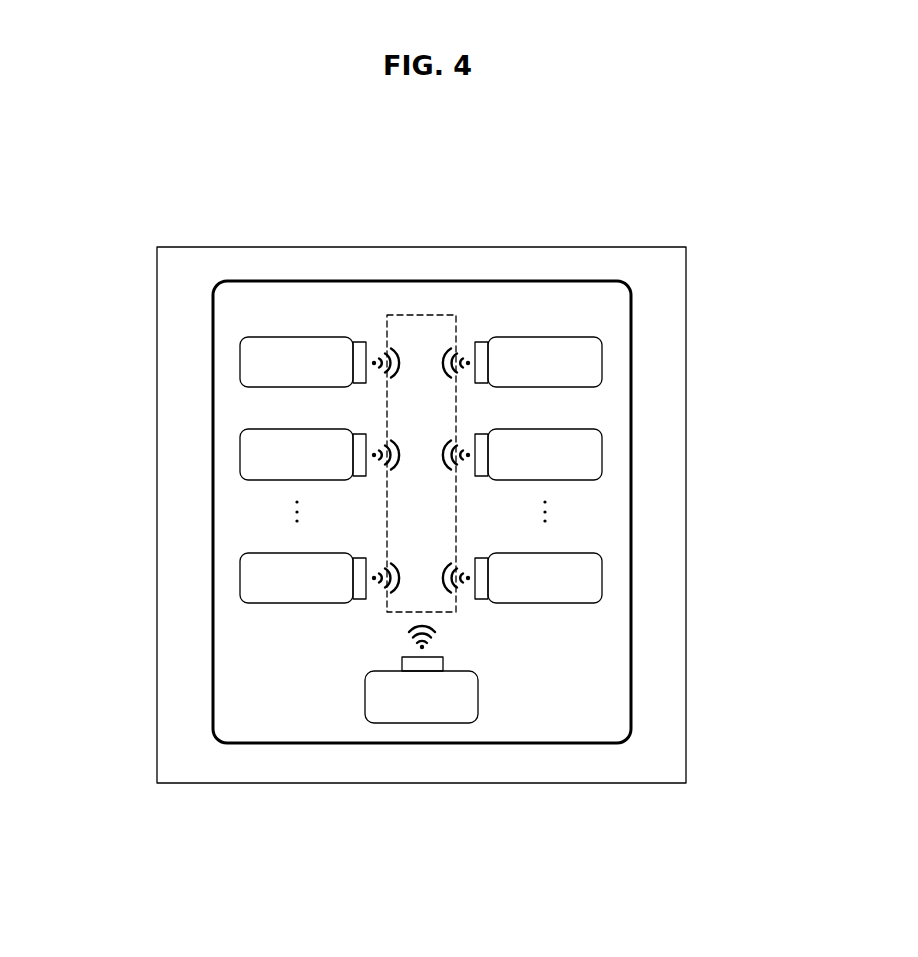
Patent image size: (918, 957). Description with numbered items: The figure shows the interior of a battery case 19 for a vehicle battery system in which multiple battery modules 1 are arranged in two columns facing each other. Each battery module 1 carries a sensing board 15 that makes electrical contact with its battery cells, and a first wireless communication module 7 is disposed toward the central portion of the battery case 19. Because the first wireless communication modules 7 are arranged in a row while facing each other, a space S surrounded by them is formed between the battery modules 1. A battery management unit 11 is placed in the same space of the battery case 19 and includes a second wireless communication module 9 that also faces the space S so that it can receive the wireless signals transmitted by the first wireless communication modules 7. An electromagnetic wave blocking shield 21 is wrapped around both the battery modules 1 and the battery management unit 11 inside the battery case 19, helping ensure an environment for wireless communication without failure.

The battery module 1 is at (258, 359).
The first wireless communication module 7 is at (416, 494).
The sensing board 15 is at (363, 445).
The second wireless communication module 9 is at (405, 660).
The battery management unit 11 is at (435, 704).
The battery case 19 is at (686, 528).
The electromagnetic wave blocking shield 21 is at (549, 283).
The space S is at (427, 315).